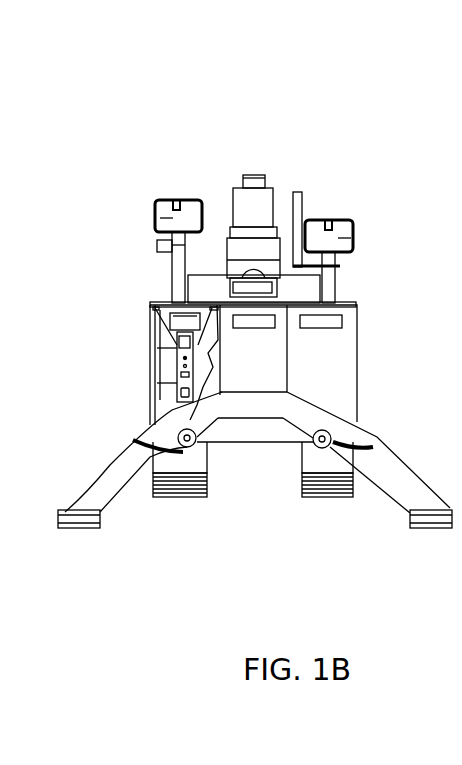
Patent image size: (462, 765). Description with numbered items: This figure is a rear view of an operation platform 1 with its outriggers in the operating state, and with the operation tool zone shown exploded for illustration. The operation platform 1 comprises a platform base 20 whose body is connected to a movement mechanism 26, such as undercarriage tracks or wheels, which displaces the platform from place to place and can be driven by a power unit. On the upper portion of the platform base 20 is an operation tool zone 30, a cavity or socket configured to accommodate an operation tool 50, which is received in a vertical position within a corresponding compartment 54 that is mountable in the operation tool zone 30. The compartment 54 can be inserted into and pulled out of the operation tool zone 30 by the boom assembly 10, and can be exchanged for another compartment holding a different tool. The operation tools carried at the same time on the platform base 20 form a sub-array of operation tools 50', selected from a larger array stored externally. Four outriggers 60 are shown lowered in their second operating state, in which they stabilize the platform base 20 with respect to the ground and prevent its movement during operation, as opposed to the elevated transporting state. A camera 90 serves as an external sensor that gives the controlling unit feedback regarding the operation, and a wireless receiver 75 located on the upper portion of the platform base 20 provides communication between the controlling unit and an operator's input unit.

The operation platform 1 is at (140, 152).
The boom assembly 10 is at (267, 165).
The platform base 20 is at (137, 335).
The movement mechanism 26 is at (320, 497).
The operation tool zone 30 is at (350, 313).
The operation tool 50 is at (125, 367).
The sub-array of operation tools 50' is at (185, 272).
The compartment 54 is at (162, 403).
The outrigger 60 is at (110, 487).
The wireless receiver 75 is at (302, 203).
The camera 90 is at (163, 200).